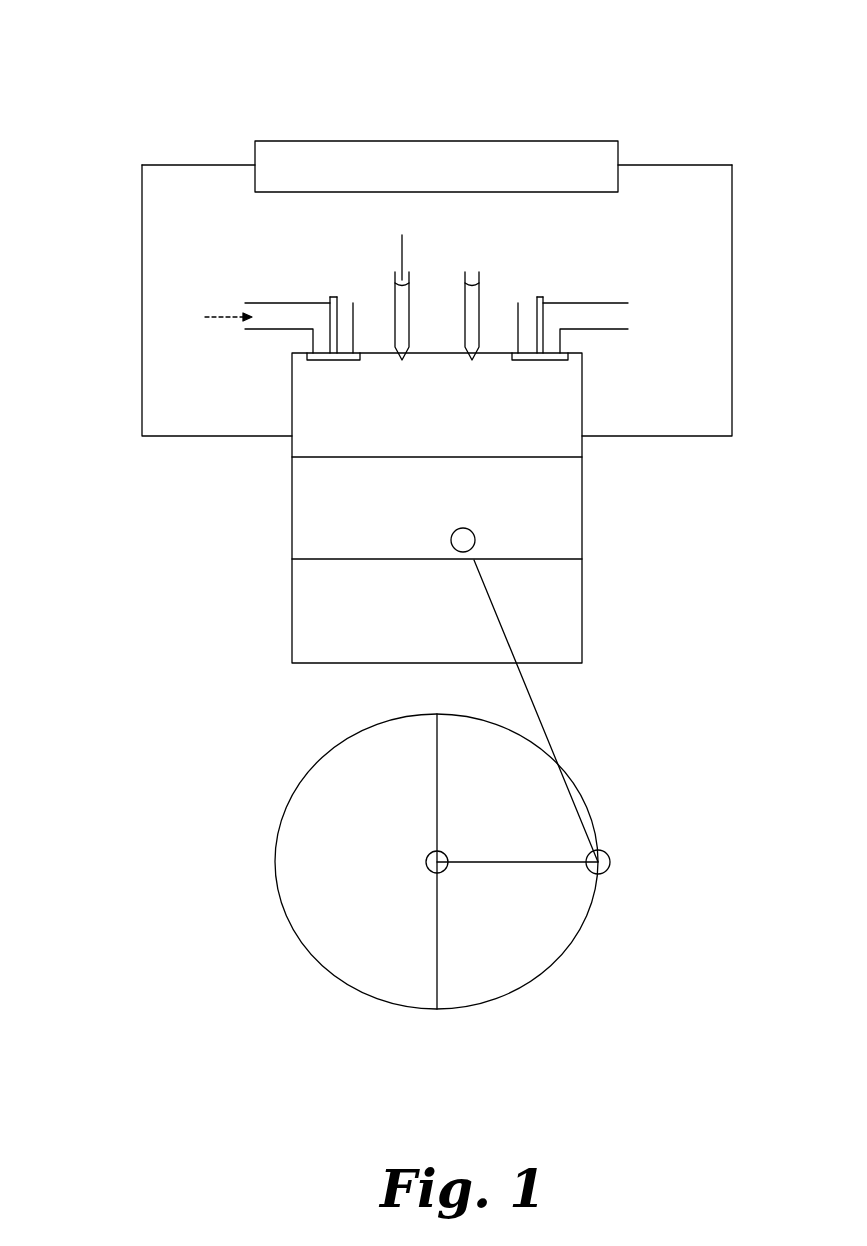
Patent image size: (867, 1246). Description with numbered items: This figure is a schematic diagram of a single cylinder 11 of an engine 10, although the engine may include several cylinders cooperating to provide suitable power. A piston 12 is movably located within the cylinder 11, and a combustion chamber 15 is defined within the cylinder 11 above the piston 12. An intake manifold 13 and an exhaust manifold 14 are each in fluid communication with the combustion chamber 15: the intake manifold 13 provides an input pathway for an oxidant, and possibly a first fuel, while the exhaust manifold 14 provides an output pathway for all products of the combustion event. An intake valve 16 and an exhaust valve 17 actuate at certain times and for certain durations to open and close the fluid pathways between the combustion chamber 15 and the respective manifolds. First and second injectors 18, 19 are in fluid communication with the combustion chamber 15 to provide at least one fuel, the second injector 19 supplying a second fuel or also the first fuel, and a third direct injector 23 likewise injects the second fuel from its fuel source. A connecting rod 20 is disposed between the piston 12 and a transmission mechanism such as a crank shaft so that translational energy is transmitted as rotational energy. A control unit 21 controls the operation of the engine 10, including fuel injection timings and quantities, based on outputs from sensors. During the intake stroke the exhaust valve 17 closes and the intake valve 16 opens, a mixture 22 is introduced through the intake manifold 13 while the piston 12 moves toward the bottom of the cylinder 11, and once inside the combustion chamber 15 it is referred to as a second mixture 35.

The engine 10 is at (112, 52).
The cylinder 11 is at (305, 620).
The piston 12 is at (303, 532).
The intake manifold 13 is at (258, 302).
The exhaust manifold 14 is at (612, 332).
The combustion chamber 15 is at (314, 442).
The intake valve 16 is at (332, 296).
The exhaust valve 17 is at (543, 294).
The first injector 18 is at (395, 290).
The second injector 19 is at (472, 271).
The connecting rod 20 is at (538, 712).
The control unit 21 is at (258, 147).
The mixture 22 is at (214, 318).
The third direct injector 23 is at (400, 239).
The second mixture 35 is at (453, 426).